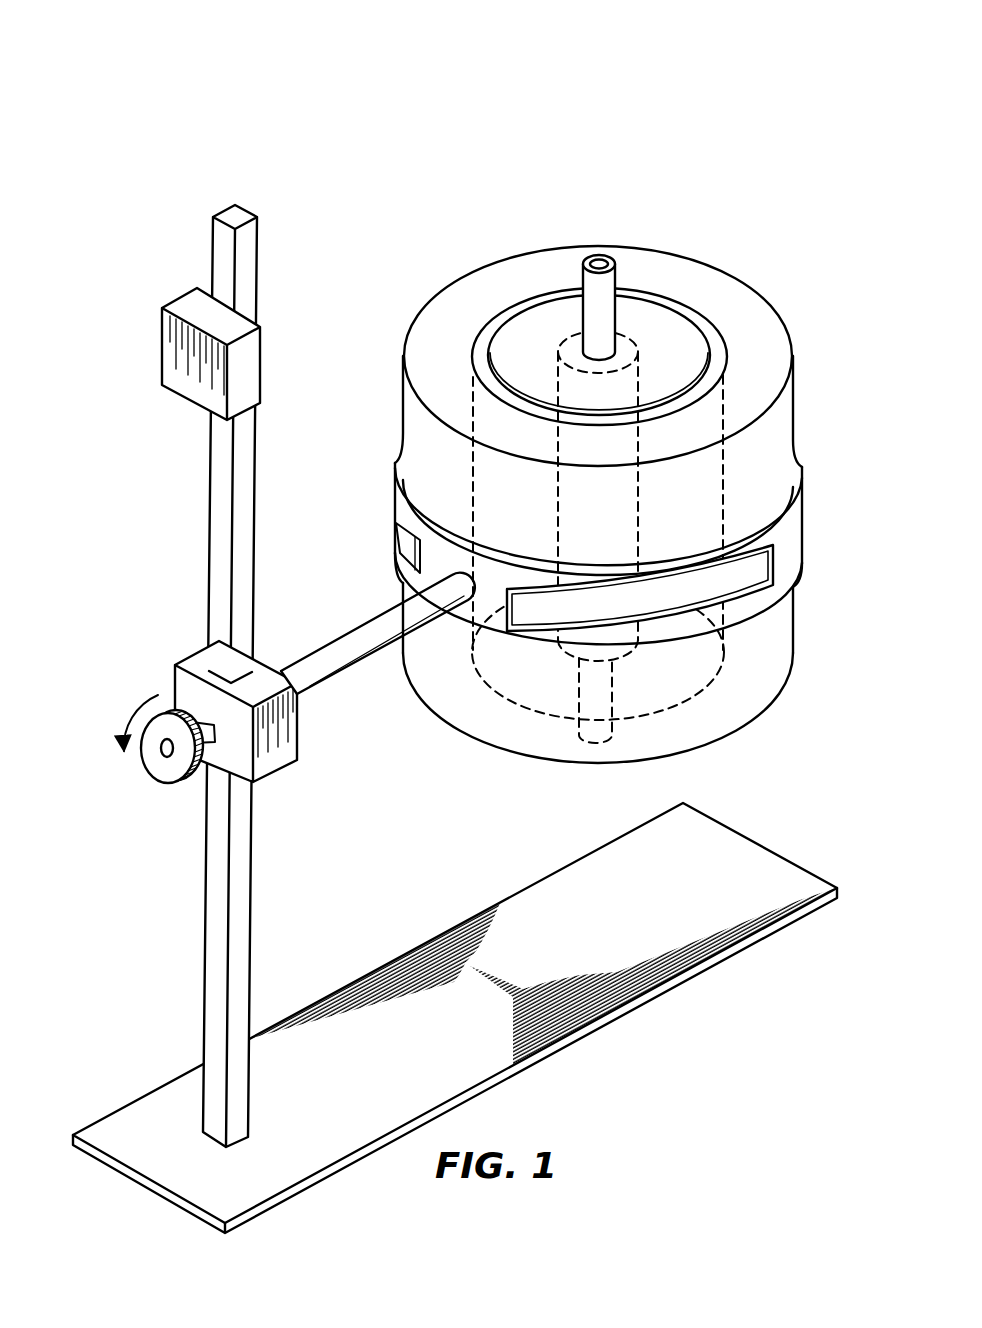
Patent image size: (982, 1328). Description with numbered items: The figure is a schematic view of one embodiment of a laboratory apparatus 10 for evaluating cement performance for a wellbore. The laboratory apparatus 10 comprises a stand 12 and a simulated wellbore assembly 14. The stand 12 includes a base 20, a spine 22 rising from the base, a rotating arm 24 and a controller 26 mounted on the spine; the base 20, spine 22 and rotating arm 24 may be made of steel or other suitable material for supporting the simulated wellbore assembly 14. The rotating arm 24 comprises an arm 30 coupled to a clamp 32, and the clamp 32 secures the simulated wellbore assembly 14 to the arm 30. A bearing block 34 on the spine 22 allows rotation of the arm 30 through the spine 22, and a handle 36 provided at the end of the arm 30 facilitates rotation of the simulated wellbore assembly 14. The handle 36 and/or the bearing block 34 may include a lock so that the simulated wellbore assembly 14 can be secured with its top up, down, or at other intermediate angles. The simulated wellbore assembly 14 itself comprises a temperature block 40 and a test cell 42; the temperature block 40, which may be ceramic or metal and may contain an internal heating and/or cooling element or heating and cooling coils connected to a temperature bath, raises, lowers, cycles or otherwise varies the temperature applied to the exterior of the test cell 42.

The laboratory apparatus 10 is at (273, 74).
The stand 12 is at (346, 782).
The simulated wellbore assembly 14 is at (711, 213).
The base 20 is at (646, 905).
The spine 22 is at (206, 1009).
The rotating arm 24 is at (118, 791).
The controller 26 is at (160, 334).
The arm 30 is at (348, 632).
The clamp 32 is at (812, 513).
The bearing block 34 is at (175, 683).
The handle 36 is at (165, 782).
The temperature block 40 is at (793, 632).
The test cell 42 is at (544, 307).